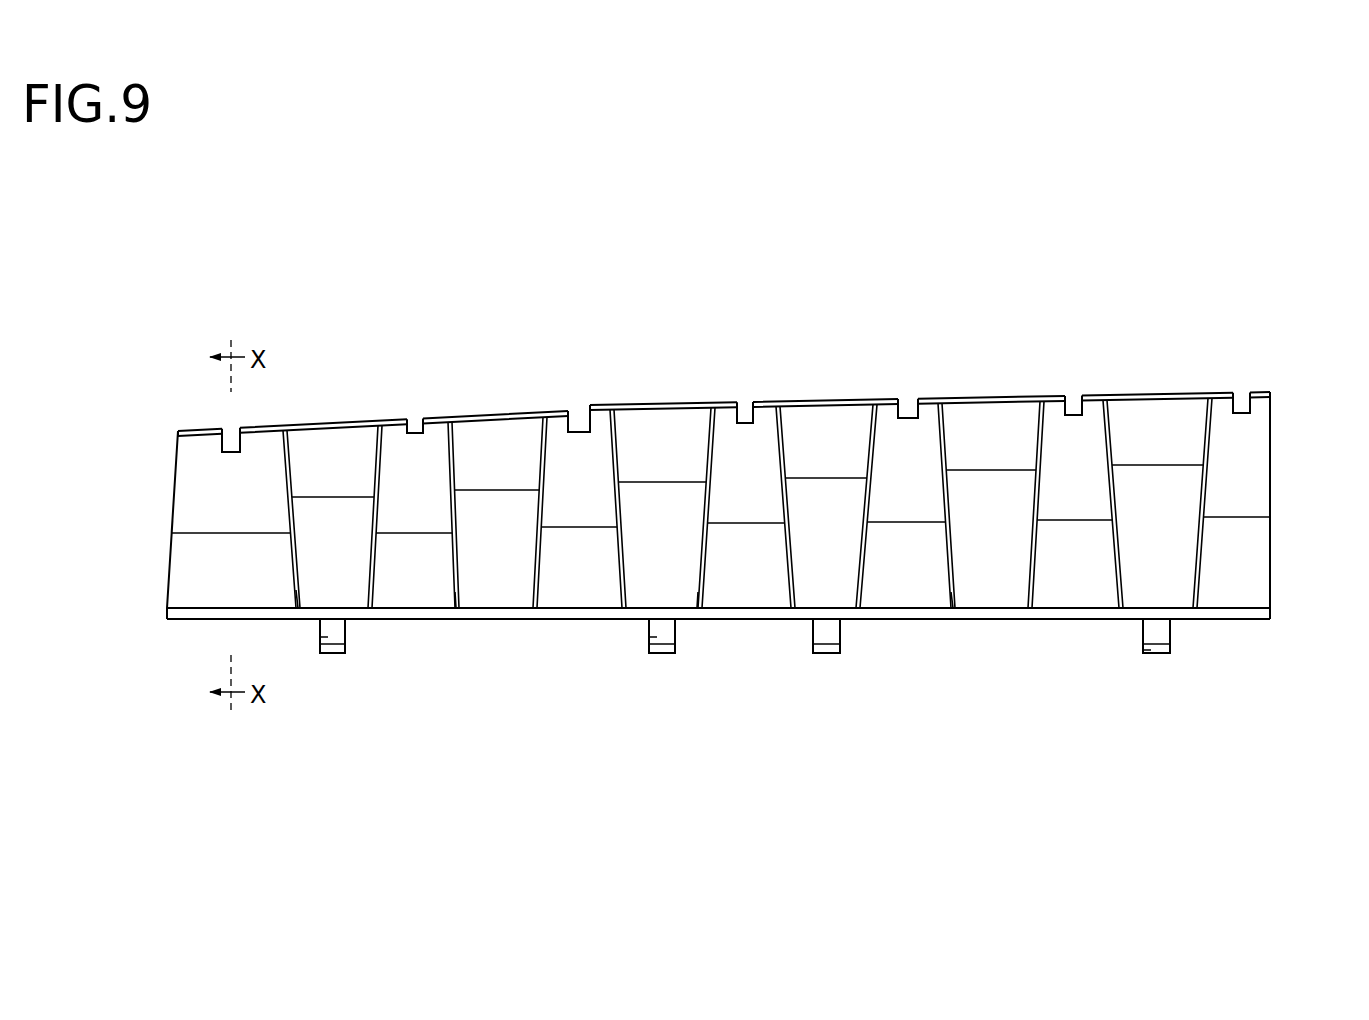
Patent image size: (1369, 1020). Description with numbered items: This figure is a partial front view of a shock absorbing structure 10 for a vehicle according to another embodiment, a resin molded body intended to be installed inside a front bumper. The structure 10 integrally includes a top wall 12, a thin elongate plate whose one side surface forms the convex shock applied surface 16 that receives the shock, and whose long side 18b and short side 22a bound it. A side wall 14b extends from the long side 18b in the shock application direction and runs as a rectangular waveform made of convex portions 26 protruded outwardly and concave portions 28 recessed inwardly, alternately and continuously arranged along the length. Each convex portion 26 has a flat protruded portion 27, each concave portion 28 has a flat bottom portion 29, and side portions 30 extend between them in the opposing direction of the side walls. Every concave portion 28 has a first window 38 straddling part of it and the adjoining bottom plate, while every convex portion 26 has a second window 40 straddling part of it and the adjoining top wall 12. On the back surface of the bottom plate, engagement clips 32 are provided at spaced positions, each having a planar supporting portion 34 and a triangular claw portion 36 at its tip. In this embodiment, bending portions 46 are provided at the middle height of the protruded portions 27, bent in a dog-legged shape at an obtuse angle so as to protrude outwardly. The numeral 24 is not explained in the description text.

The shock absorbing structure 10 is at (824, 352).
The top wall 12 is at (724, 367).
The side wall 14b is at (222, 566).
The shock applied surface 16 is at (626, 404).
The long side 18b is at (820, 402).
The short side 22a is at (184, 431).
The opposite end wall 24 is at (1192, 540).
The convex portion 26 is at (733, 507).
The protruded portion 27 is at (724, 498).
The concave portion 28 is at (381, 425).
The bottom portion 29 is at (497, 473).
The side portion 30 is at (735, 481).
The engagement clip 32 is at (791, 704).
The supporting portion 34 is at (345, 650).
The claw portion 36 is at (321, 637).
The first window 38 is at (299, 606).
The second window 40 is at (414, 428).
The bending portion 46 is at (224, 533).